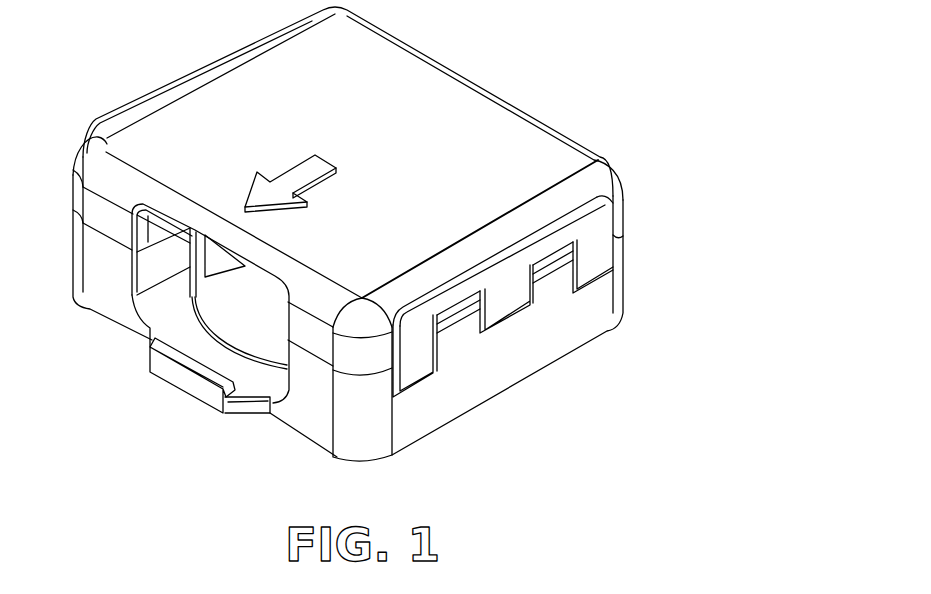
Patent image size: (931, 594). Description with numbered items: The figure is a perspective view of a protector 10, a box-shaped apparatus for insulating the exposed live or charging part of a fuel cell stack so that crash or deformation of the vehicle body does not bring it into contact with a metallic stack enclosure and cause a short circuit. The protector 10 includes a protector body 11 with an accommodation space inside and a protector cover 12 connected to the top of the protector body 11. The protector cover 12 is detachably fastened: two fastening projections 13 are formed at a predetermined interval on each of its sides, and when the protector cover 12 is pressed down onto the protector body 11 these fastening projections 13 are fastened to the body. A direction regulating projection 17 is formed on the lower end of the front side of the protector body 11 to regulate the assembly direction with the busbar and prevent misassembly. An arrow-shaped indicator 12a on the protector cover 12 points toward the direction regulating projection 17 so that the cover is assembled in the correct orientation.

The protector 10 is at (434, 251).
The protector body 11 is at (386, 326).
The protector cover 12 is at (357, 172).
The arrow-shaped indicator 12a is at (297, 173).
The fastening projections 13 is at (548, 258).
The direction regulating projection 17 is at (183, 379).